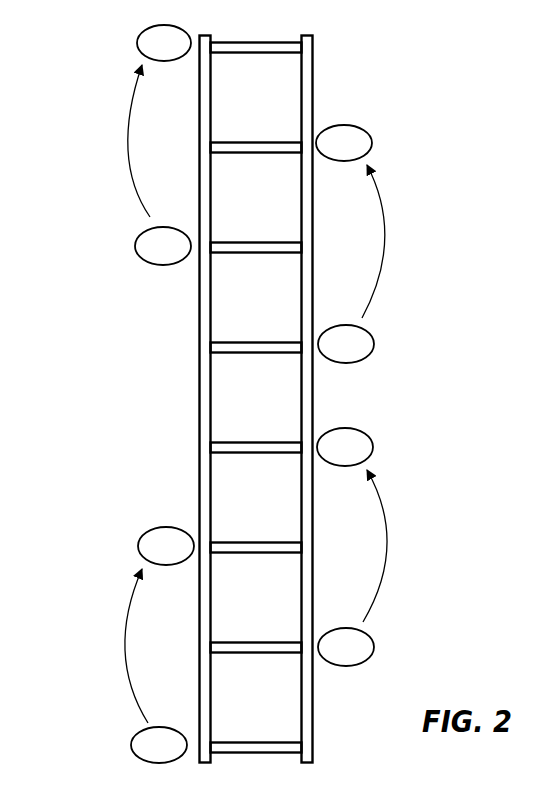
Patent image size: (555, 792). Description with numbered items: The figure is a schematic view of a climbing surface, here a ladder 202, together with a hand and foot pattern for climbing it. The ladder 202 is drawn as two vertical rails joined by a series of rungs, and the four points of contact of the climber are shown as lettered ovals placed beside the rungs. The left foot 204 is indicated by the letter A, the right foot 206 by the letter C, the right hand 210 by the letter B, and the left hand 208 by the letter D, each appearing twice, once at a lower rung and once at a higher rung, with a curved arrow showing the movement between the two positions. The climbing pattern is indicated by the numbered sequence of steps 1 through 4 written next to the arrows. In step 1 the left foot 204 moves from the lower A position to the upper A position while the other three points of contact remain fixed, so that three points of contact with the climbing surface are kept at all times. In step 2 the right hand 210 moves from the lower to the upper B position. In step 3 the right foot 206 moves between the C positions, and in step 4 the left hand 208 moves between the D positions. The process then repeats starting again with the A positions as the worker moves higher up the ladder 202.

The ladder 202 is at (198, 422).
The left foot 204 is at (153, 763).
The right foot 206 is at (368, 658).
The left hand 208 is at (165, 263).
The right hand 210 is at (353, 362).
The first step of climbing pattern 1 is at (114, 646).
The second step of climbing pattern 2 is at (396, 241).
The third step of climbing pattern 3 is at (402, 546).
The fourth step of climbing pattern 4 is at (118, 141).